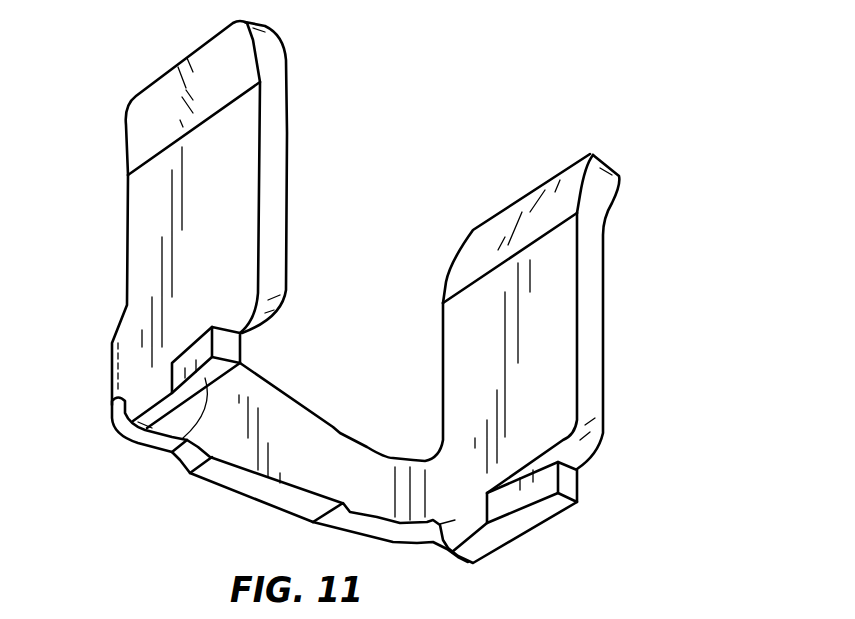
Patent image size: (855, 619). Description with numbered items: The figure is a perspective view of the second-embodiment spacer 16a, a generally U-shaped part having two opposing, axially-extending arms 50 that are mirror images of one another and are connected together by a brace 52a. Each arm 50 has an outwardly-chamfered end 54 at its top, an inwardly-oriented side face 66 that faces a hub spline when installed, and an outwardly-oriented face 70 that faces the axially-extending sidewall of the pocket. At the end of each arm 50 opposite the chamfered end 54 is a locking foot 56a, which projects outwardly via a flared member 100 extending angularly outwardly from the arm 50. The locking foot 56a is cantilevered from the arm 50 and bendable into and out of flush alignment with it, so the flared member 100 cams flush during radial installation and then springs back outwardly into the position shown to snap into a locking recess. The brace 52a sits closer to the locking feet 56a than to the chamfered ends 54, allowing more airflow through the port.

The spacer 16a is at (700, 247).
The arm 50 is at (150, 270).
The outwardly-chamfered end 54 is at (133, 118).
The locking foot 56a is at (128, 380).
The outwardly-oriented face 70 is at (231, 216).
The inwardly-oriented side face 66 is at (486, 380).
The flared member 100 is at (213, 367).
The brace 52a is at (324, 403).